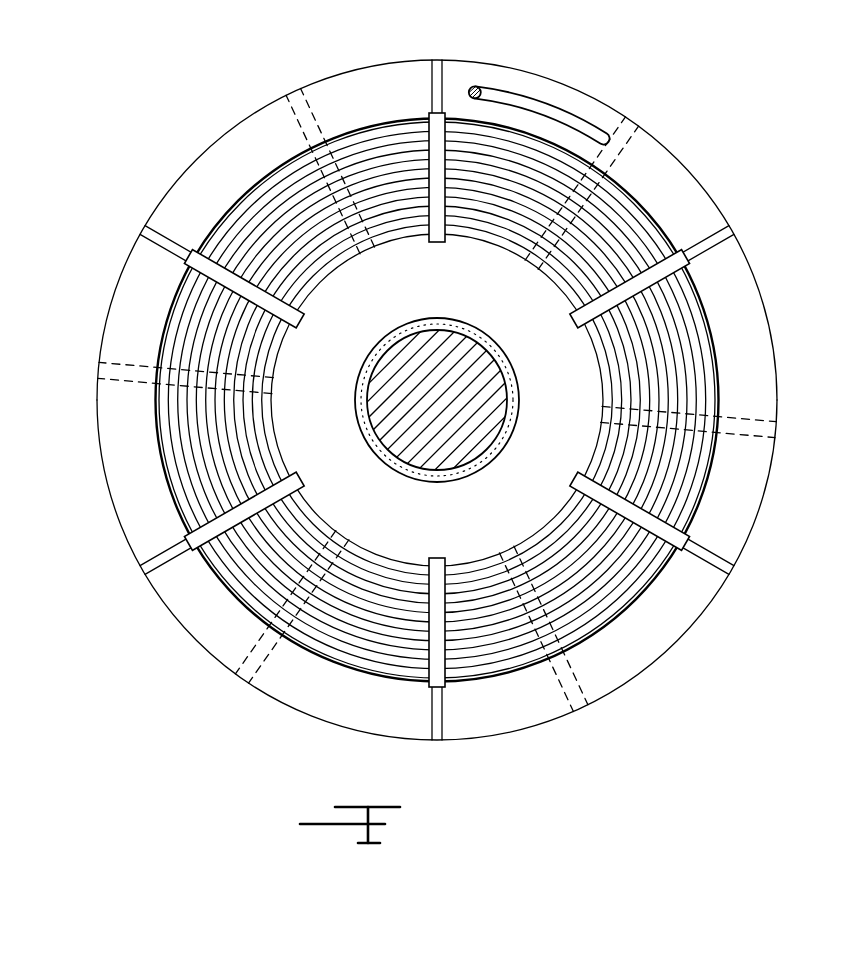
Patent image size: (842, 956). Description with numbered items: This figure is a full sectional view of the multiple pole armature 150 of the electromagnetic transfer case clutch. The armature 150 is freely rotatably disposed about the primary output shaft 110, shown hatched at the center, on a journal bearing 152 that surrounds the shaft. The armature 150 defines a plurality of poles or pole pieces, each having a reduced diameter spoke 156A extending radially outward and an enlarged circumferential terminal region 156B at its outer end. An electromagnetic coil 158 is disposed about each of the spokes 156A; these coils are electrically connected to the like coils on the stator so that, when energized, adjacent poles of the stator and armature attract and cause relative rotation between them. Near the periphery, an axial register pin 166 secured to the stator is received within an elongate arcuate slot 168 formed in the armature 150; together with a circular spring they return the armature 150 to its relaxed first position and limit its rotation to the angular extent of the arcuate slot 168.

The multiple pole armature 150 is at (733, 69).
The journal bearing 152 is at (355, 398).
The primary output shaft 110 is at (458, 428).
The reduced diameter spoke 156A is at (248, 183).
The enlarged circumferential terminal region 156B is at (325, 700).
The electromagnetic coil 158 is at (650, 223).
The axial register pin 166 is at (478, 88).
The elongate arcuate slot 168 is at (565, 108).